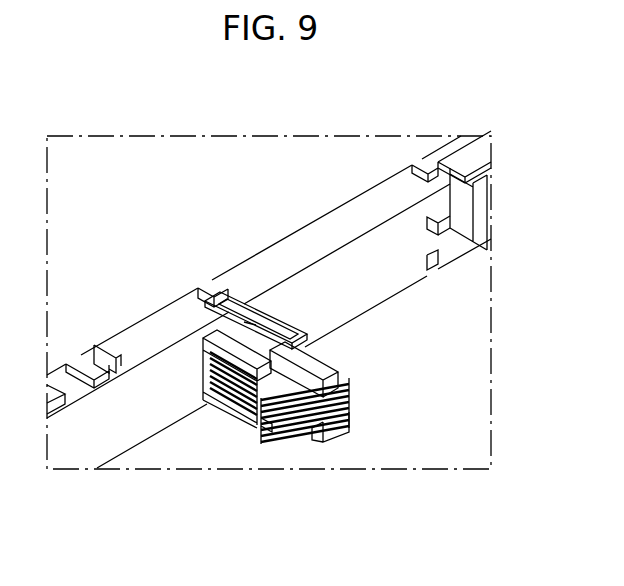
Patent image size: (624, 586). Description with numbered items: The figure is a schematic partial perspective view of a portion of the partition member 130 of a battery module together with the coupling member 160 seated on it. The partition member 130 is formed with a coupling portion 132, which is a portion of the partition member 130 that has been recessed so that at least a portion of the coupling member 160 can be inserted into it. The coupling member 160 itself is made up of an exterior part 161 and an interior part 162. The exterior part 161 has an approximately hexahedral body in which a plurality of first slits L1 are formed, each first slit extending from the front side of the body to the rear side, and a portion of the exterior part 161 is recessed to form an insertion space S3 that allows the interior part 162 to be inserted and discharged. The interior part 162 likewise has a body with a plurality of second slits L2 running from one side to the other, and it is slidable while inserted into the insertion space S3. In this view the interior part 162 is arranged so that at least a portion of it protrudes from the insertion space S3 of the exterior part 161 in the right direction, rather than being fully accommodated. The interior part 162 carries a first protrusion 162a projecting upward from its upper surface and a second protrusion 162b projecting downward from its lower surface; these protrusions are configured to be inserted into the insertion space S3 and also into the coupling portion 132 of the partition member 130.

The partition member 130 is at (357, 178).
The coupling portion 132 is at (204, 288).
The exterior part 161 is at (207, 326).
The insertion space S3 is at (257, 325).
The coupling member 160 is at (311, 394).
The interior part 162 is at (327, 394).
The first protrusion 162a is at (312, 356).
The second protrusion 162b is at (345, 442).
The first slits L1 is at (228, 384).
The second slits L2 is at (290, 402).